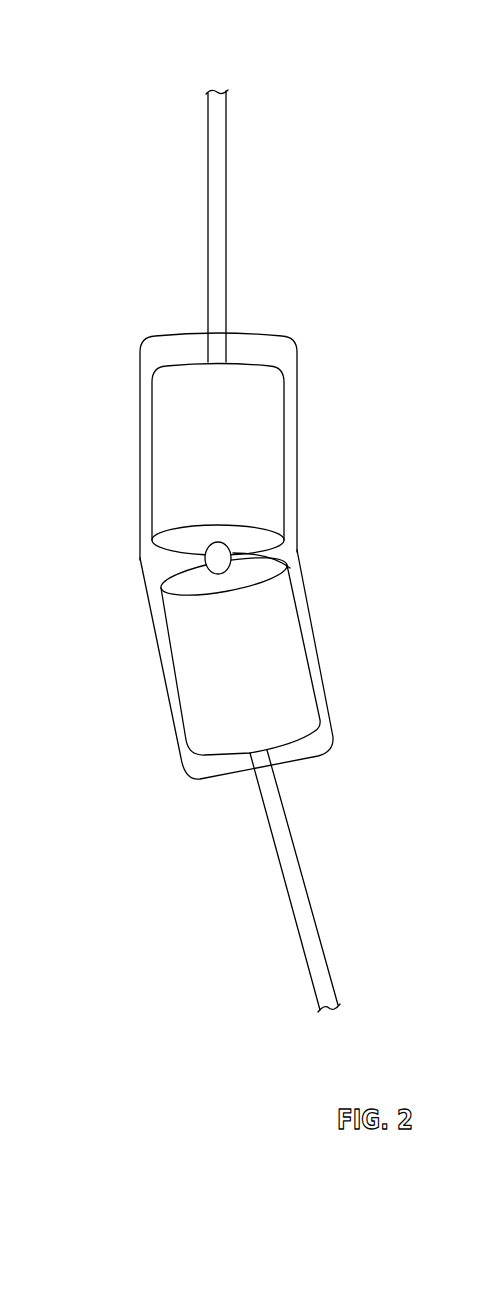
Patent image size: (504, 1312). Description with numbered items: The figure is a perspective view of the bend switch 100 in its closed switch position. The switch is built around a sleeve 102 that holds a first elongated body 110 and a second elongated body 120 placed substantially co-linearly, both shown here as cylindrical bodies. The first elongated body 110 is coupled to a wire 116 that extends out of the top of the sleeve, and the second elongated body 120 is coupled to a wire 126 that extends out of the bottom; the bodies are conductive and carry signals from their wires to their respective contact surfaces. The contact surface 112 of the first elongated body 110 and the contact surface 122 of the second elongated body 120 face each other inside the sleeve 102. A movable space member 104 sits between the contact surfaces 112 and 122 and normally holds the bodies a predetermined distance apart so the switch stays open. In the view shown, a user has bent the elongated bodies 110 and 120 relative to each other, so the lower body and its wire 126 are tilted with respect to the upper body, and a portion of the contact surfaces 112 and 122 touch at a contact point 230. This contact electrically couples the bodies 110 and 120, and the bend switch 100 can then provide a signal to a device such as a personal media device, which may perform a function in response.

The bend switch 100 is at (108, 62).
The sleeve 102 is at (298, 392).
The movable space member 104 is at (207, 560).
The first elongated body 110 is at (162, 402).
The contact surface 112 is at (162, 542).
The wire 116 is at (217, 200).
The second elongated body 120 is at (192, 722).
The contact surface 122 is at (170, 585).
The wire 126 is at (295, 892).
The contact point 230 is at (290, 568).